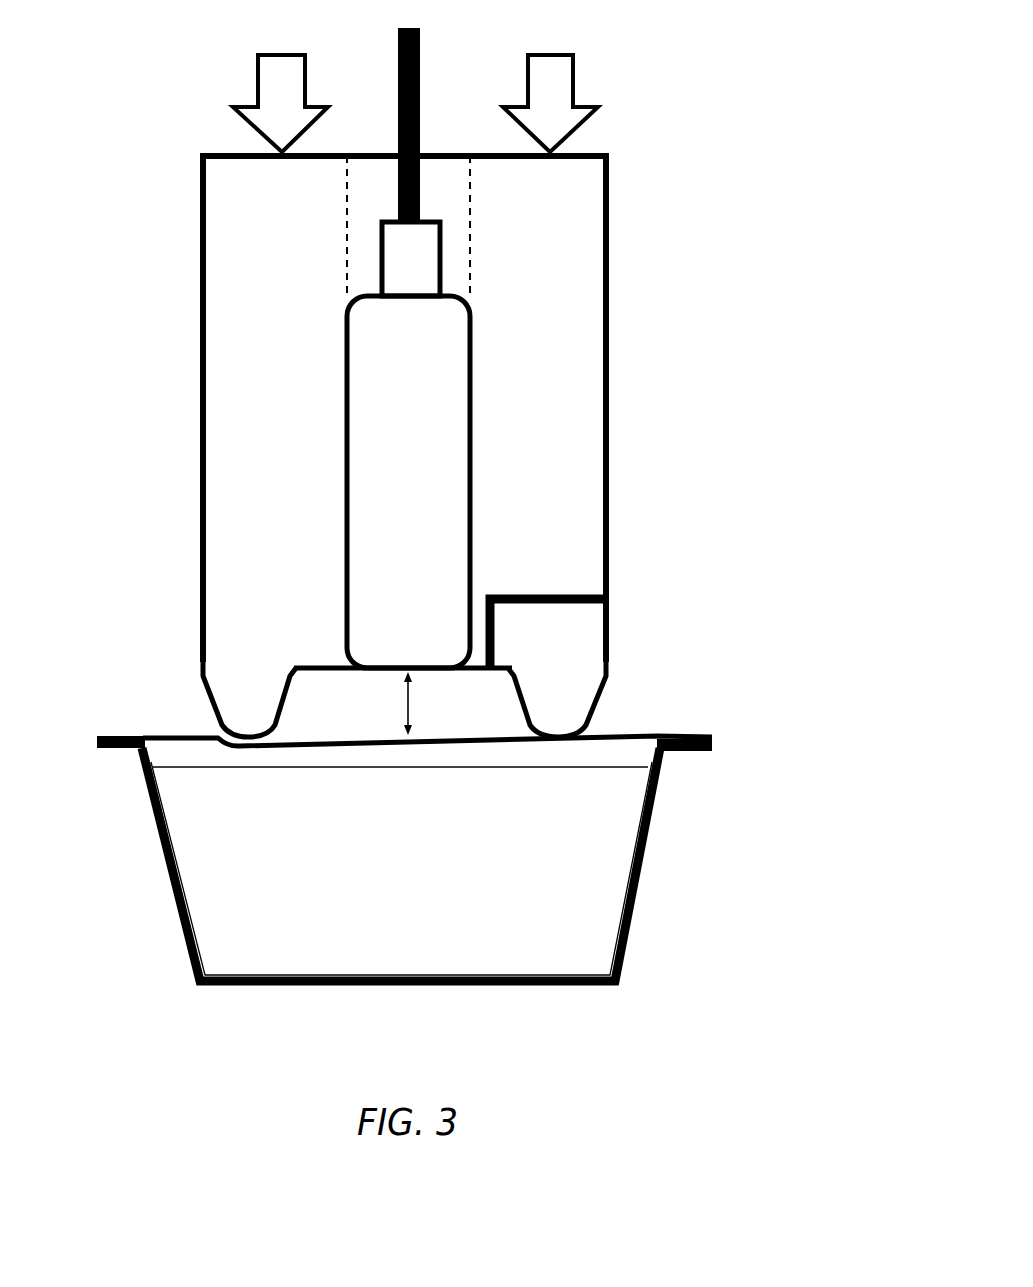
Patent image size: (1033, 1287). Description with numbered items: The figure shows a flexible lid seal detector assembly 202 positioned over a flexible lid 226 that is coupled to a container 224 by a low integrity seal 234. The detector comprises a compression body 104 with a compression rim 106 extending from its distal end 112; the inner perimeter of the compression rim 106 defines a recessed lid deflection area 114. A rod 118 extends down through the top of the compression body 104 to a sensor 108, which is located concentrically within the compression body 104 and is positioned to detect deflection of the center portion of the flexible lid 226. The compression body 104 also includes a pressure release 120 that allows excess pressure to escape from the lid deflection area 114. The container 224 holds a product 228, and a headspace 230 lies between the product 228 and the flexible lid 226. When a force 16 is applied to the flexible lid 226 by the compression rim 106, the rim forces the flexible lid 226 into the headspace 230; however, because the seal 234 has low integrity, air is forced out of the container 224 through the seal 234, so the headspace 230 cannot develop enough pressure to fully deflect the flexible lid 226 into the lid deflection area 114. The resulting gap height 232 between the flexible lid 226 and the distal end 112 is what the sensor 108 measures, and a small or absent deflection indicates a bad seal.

The apparatus assembly 202 is at (612, 48).
The force 16 is at (273, 55).
The rod 118 is at (410, 28).
The compression body 104 is at (608, 253).
The sensor 108 is at (473, 327).
The pressure release 120 is at (592, 592).
The distal end 112 is at (338, 666).
The lid deflection area 114 is at (328, 702).
The compression rim 106 is at (600, 687).
The gap 232 is at (408, 690).
The flexible lid 226 is at (632, 733).
The headspace 230 is at (178, 758).
The low integrity seal 234 is at (714, 739).
The container 224 is at (645, 850).
The product 228 is at (217, 877).